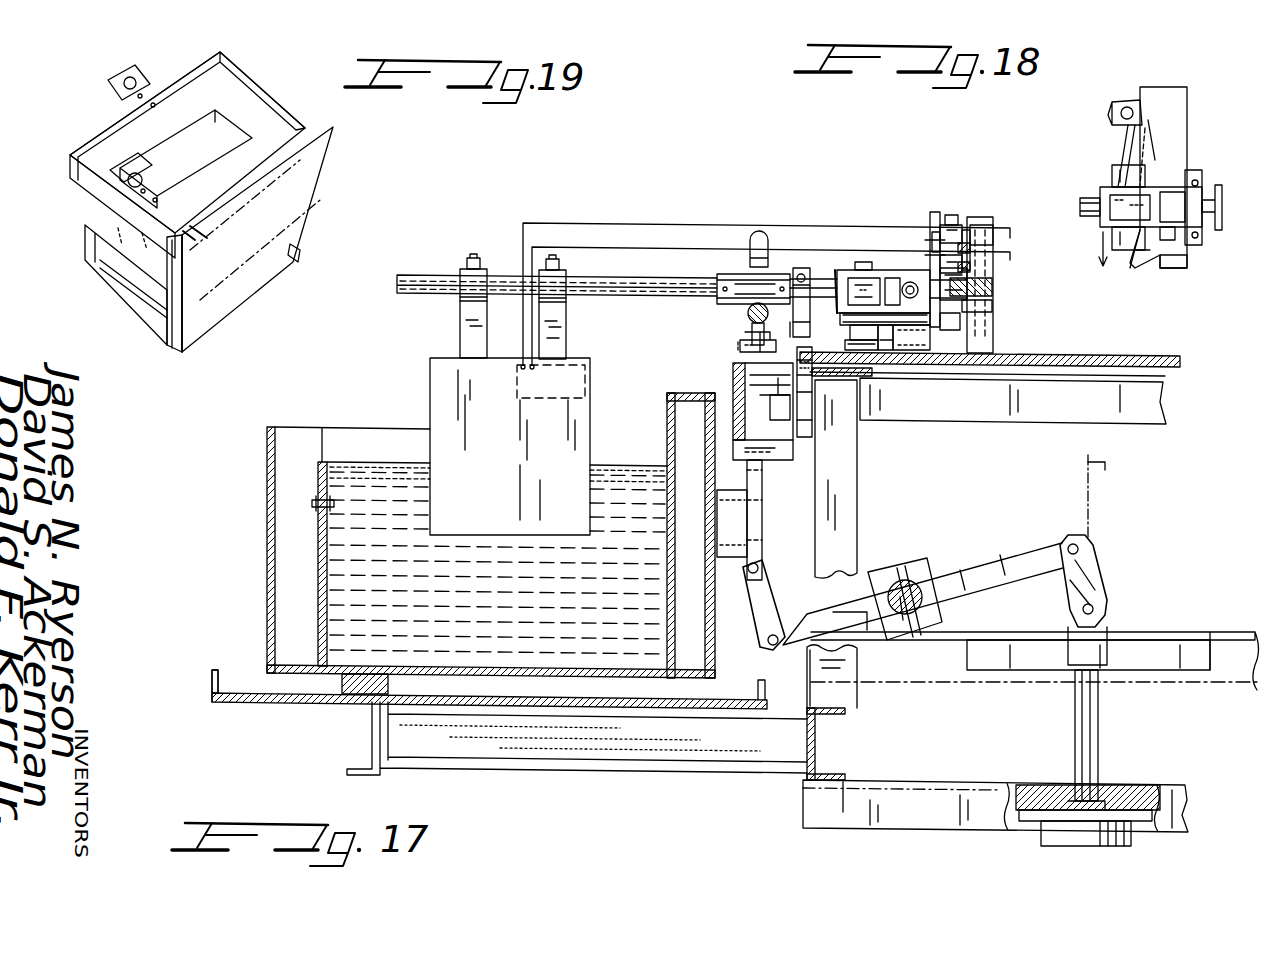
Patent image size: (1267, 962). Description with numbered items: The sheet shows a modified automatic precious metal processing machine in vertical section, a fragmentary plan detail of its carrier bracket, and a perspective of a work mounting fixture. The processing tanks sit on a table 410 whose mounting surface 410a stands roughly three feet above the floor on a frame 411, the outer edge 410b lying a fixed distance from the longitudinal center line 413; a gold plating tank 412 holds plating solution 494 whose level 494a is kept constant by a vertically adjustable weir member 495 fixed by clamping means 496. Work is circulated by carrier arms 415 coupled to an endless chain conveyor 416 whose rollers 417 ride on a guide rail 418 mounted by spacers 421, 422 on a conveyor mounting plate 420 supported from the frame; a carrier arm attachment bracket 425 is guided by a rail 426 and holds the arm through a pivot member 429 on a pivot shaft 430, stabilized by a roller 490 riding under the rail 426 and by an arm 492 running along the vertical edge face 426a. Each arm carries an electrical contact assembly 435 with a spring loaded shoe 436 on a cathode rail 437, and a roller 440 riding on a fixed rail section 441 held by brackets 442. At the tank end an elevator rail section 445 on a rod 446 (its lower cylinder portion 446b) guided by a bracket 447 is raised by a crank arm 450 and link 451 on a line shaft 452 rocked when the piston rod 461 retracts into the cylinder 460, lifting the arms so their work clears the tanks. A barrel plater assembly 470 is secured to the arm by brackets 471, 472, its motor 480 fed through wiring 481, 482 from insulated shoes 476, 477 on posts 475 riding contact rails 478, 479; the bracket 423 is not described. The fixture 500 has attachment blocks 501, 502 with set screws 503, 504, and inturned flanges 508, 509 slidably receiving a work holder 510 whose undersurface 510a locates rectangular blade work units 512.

In FIG. 19, the work mounting fixture 500 is at (347, 181).
In FIG. 19, the attachment block 501 is at (200, 72).
In FIG. 19, the attachment block 502 is at (148, 170).
In FIG. 19, the set screw 503 is at (128, 80).
In FIG. 19, the set screw 504 is at (118, 198).
In FIG. 19, the horizontal inturned flange 508 is at (180, 335).
In FIG. 19, the horizontal inturned flange 509 is at (300, 262).
In FIG. 19, the work holder 510 is at (250, 295).
In FIG. 19, the undersurface 510a is at (118, 275).
In FIG. 19, the work unit 512 is at (205, 246).
In FIG. 17, the table 410 is at (242, 720).
In FIG. 17, the mounting surface 410a is at (300, 702).
In FIG. 17, the outer edge 410b is at (212, 685).
In FIG. 17, the frame 411 is at (616, 772).
In FIG. 17, the gold plating tank 412 is at (257, 557).
In FIG. 17, the longitudinal center line 413 is at (1090, 492).
In FIG. 18, the carrier arm 415 is at (1100, 190).
In FIG. 17, the carrier arm 415 is at (440, 268).
In FIG. 17, the endless chain conveyor 416 is at (968, 268).
In FIG. 17, the roller 417 is at (980, 305).
In FIG. 17, the horizontal guide rail 418 is at (992, 287).
In FIG. 17, the conveyor mounting plate 420 is at (1115, 340).
In FIG. 17, the spacer 421 is at (990, 306).
In FIG. 17, the spacer 422 is at (978, 240).
In FIG. 17, the bracket 423 is at (905, 352).
In FIG. 18, the carrier arm attachment bracket 425 is at (1165, 185).
In FIG. 17, the carrier arm attachment bracket 425 is at (902, 268).
In FIG. 18, the guide rail 426 is at (1168, 270).
In FIG. 17, the guide rail 426 is at (912, 335).
In FIG. 18, the vertical edge face 426a is at (1130, 270).
In FIG. 17, the vertical edge face 426a is at (840, 268).
In FIG. 18, the pivot member 429 is at (1170, 190).
In FIG. 17, the pivot member 429 is at (880, 270).
In FIG. 18, the pivot shaft 430 is at (1170, 242).
In FIG. 17, the pivot shaft 430 is at (915, 330).
In FIG. 17, the electrical contact assembly 435 is at (740, 350).
In FIG. 17, the spring loaded shoe 436 is at (812, 295).
In FIG. 17, the cathode rail 437 is at (812, 385).
In FIG. 17, the roller 440 is at (748, 313).
In FIG. 17, the rail section 441 is at (745, 332).
In FIG. 17, the bracket 442 is at (733, 375).
In FIG. 17, the elevator rail section 445 is at (760, 232).
In FIG. 17, the rod 446 is at (720, 276).
In FIG. 17, the cylinder (vertical) 446b is at (755, 512).
In FIG. 17, the guide bracket 447 is at (785, 460).
In FIG. 17, the crank arm 450 is at (836, 607).
In FIG. 17, the link 451 is at (762, 618).
In FIG. 17, the line shaft 452 is at (903, 580).
In FIG. 17, the cylinder 460 is at (1050, 835).
In FIG. 17, the piston rod 461 is at (1090, 712).
In FIG. 17, the barrel plater assembly 470 is at (418, 373).
In FIG. 17, the support bracket 471 is at (470, 310).
In FIG. 17, the support bracket 472 is at (558, 316).
In FIG. 18, the upstanding post 475 is at (1197, 185).
In FIG. 17, the upstanding post 475 is at (947, 222).
In FIG. 18, the spring urged shoe 476 is at (1212, 196).
In FIG. 17, the spring urged shoe 476 is at (950, 230).
In FIG. 17, the spring urged shoe 477 is at (972, 266).
In FIG. 17, the electrical contact rail 478 is at (970, 248).
In FIG. 18, the electrical contact rail 479 is at (1222, 228).
In FIG. 17, the electrical contact rail 479 is at (966, 238).
In FIG. 17, the motor 480 is at (588, 380).
In FIG. 17, the electrical wiring 481 is at (625, 223).
In FIG. 17, the electrical wiring 482 is at (560, 248).
In FIG. 17, the roller 490 is at (870, 352).
In FIG. 18, the arm 492 is at (1125, 140).
In FIG. 17, the arm 492 is at (868, 262).
In FIG. 17, the precious metal plating solution 494 is at (355, 590).
In FIG. 17, the level 494a is at (375, 462).
In FIG. 17, the weir member 495 is at (318, 478).
In FIG. 17, the clamping means 496 is at (312, 504).